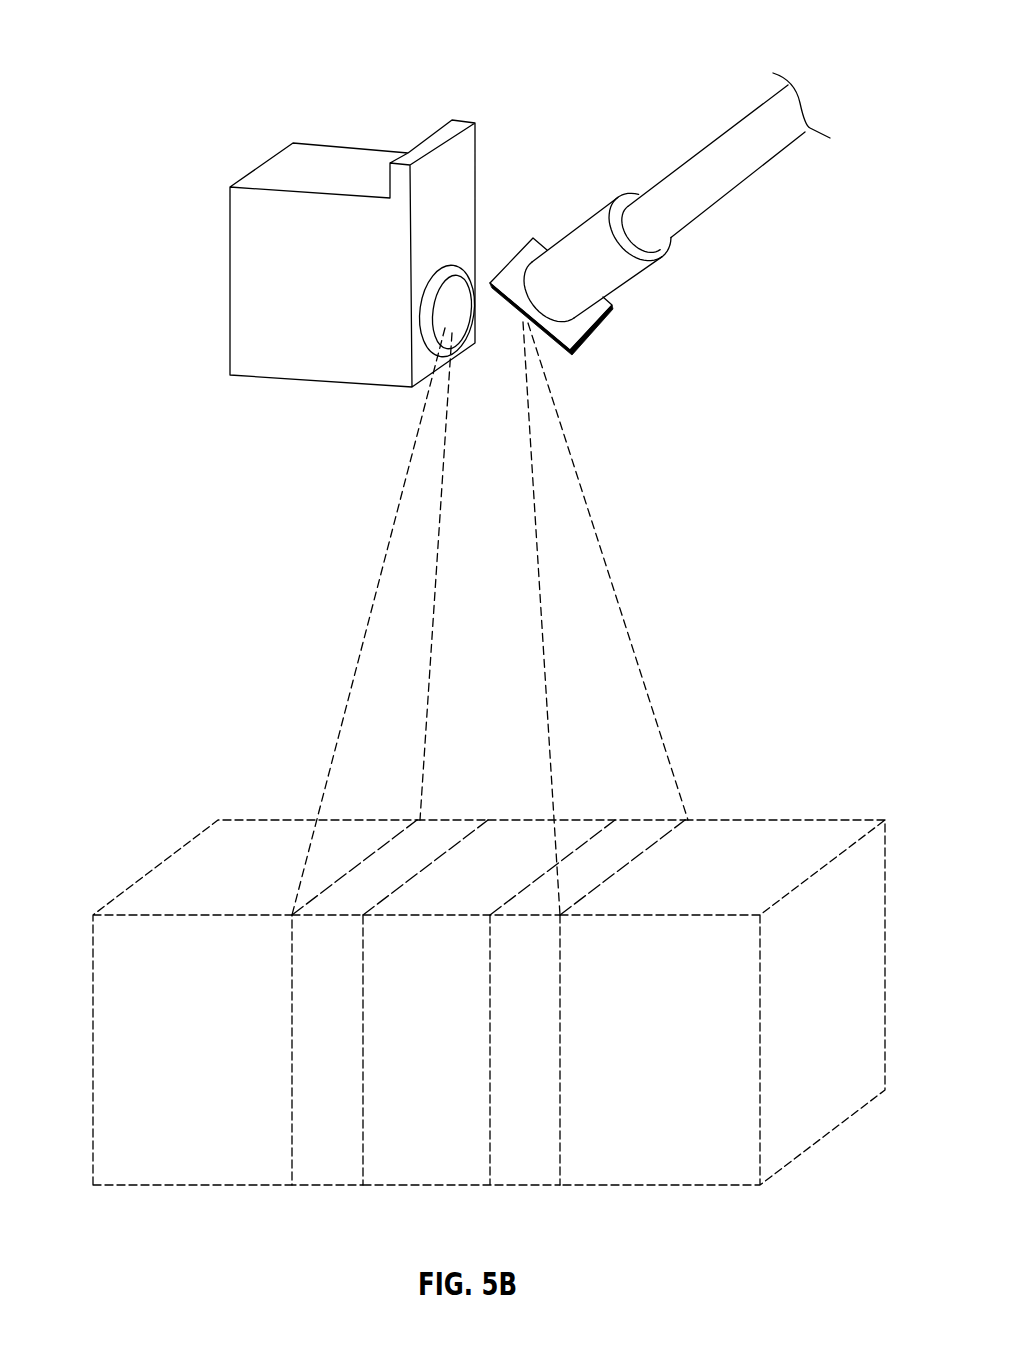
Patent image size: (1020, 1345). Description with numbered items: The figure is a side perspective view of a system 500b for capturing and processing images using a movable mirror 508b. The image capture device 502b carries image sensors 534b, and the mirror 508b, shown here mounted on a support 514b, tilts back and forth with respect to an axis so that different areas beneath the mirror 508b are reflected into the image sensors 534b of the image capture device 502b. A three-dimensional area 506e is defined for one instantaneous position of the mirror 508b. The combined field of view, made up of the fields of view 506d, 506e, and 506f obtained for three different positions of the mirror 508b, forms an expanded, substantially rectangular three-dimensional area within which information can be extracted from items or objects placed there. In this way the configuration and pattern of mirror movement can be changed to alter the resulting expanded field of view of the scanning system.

The system 500b is at (164, 44).
The image capture device 502b is at (278, 168).
The image sensors 534b is at (453, 315).
The laser light source arm 514b is at (718, 135).
The movable mirror 508b is at (572, 353).
The field of view 506d is at (243, 820).
The three-dimensional area 506e is at (452, 820).
The field of view 506f is at (770, 820).